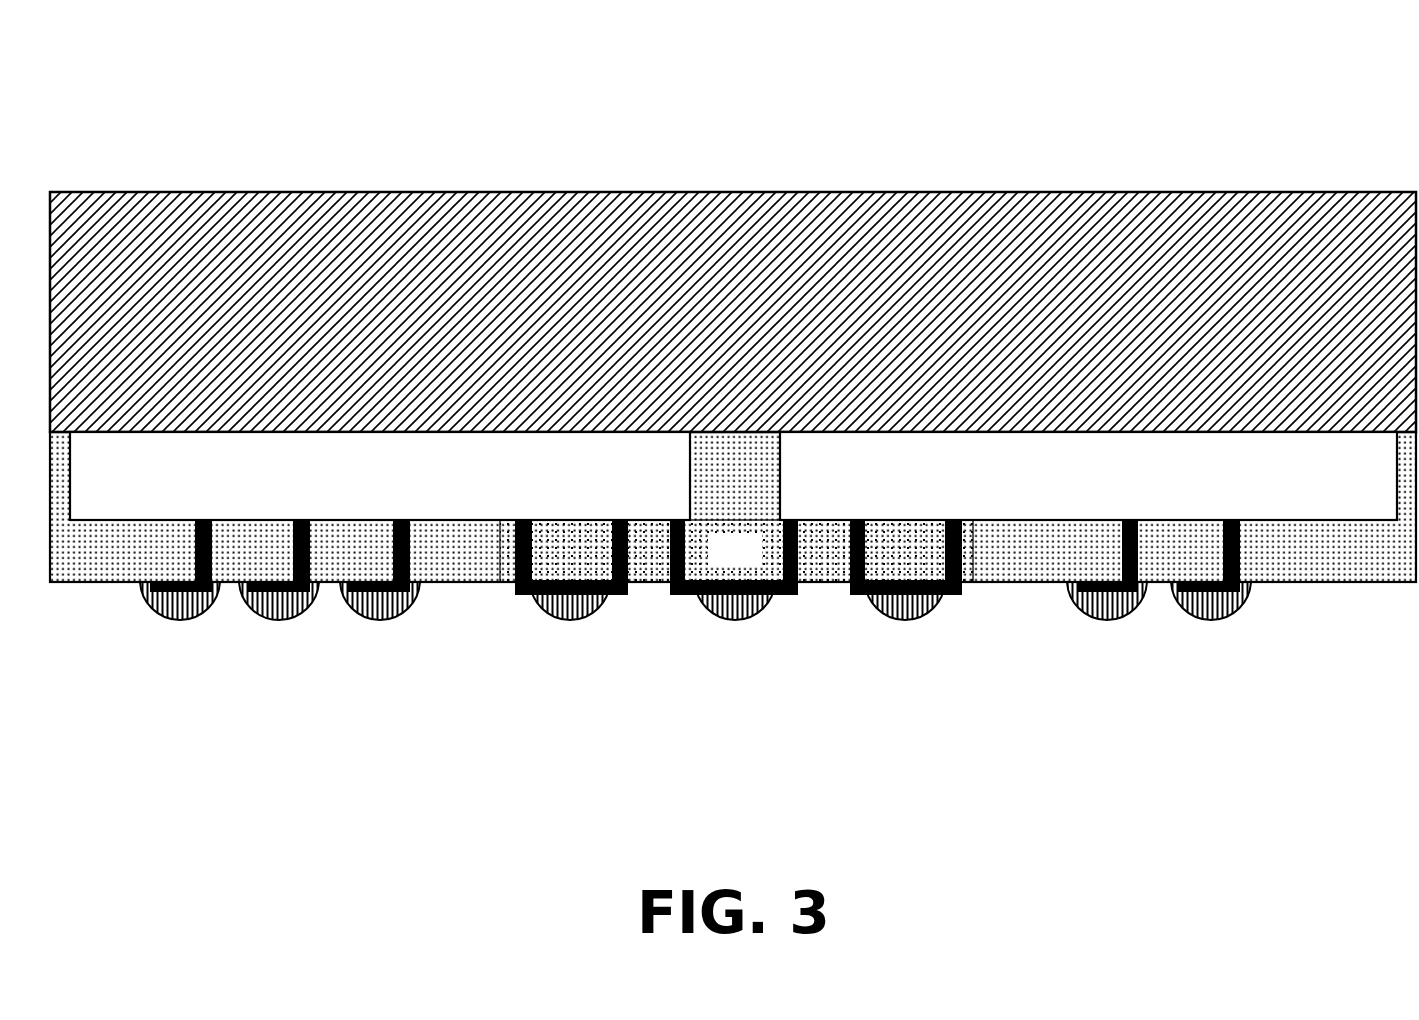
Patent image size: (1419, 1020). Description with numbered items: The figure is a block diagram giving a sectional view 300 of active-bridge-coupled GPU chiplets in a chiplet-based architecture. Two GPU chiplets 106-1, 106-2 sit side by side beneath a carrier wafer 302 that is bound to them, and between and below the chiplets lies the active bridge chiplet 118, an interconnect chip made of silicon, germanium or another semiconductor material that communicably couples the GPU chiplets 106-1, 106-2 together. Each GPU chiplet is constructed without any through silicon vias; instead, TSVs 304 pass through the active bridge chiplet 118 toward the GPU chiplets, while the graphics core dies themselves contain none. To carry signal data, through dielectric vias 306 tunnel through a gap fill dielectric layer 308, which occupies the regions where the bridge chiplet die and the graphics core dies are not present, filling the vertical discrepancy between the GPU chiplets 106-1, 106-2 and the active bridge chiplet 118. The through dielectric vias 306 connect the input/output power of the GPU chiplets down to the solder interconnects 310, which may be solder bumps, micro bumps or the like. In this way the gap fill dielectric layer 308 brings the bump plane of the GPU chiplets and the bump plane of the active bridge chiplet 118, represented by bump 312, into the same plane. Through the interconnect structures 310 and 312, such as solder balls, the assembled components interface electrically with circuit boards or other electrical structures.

The view 300 is at (1397, 40).
The carrier wafer 302 is at (1032, 193).
The TSVs 304 is at (623, 593).
The through dielectric vias 306 is at (412, 563).
The gap fill dielectric layer 308 is at (138, 572).
The solder interconnects 310 is at (1215, 620).
The bump 312 is at (918, 620).
The active bridge chiplet 118 is at (719, 561).
The GPU chiplet 106-1 is at (405, 493).
The GPU chiplet 106-2 is at (1112, 493).